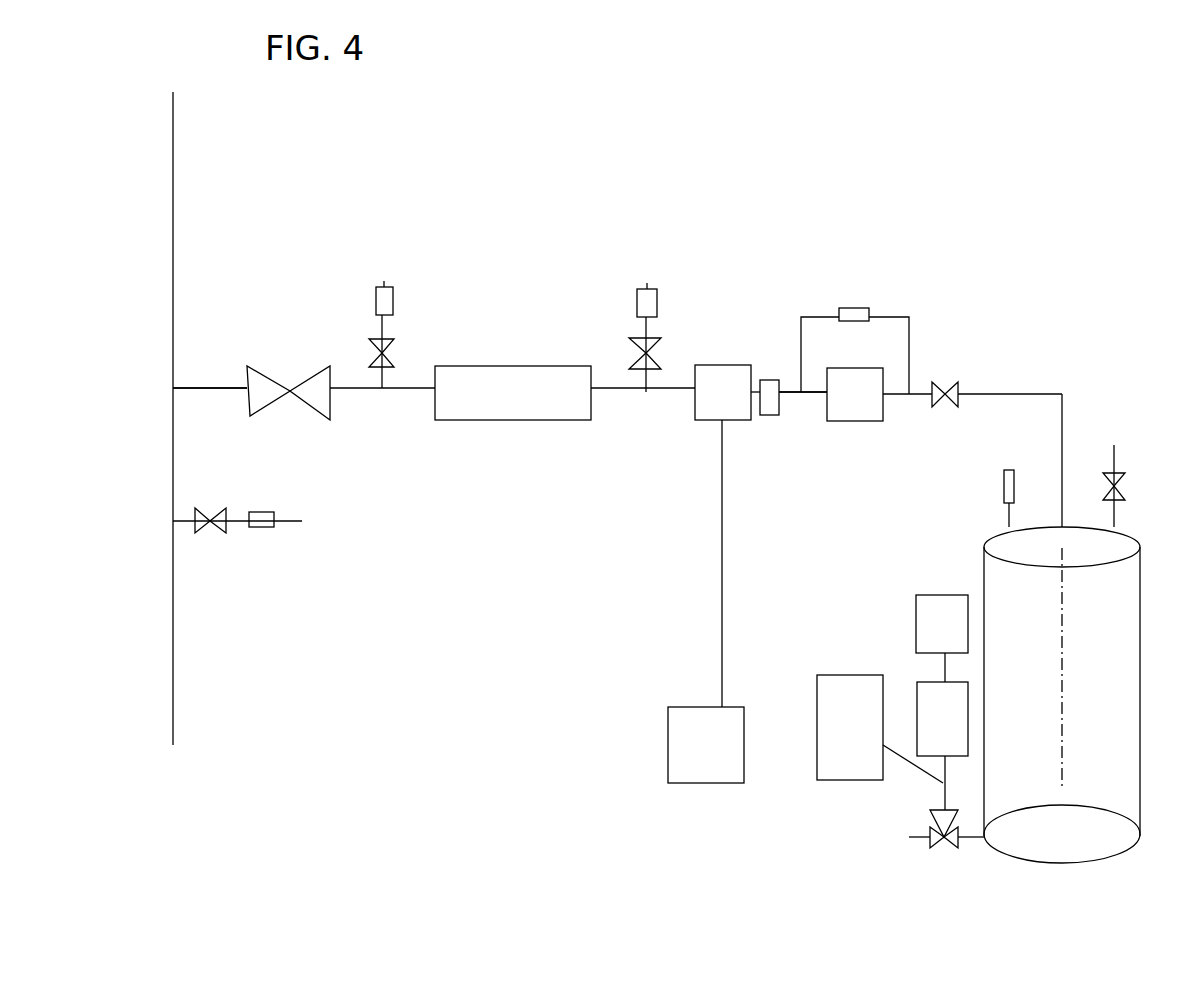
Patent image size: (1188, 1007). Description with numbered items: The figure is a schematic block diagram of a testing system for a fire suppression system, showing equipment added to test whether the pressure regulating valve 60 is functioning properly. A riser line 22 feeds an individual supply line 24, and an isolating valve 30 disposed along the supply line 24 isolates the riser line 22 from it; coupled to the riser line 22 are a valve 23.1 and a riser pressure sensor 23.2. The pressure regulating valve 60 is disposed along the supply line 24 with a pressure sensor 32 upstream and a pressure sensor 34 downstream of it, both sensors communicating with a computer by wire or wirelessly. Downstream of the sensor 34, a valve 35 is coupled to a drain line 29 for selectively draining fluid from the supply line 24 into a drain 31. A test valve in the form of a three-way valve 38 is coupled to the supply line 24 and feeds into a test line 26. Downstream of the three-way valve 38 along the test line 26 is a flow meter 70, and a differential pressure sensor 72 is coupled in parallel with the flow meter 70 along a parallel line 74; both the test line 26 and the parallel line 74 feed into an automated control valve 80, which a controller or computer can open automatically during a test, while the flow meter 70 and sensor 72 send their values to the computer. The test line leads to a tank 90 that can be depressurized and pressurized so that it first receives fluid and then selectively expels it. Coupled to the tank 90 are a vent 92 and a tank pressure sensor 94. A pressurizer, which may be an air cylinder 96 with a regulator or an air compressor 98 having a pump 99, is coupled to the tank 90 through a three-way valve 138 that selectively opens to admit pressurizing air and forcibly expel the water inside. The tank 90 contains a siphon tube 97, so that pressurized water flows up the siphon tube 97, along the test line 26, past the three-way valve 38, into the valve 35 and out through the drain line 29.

The riser line 22 is at (173, 197).
The supply line 24 is at (202, 388).
The isolating valve 30 is at (260, 368).
The pressure sensor 32 is at (407, 292).
The pressure regulating valve 60 is at (495, 366).
The pressure sensor 34 is at (663, 295).
The valve 35 is at (718, 365).
The three-way valve 38 is at (773, 386).
The test line 26 is at (790, 395).
The flow meter 70 is at (832, 422).
The differential pressure sensor 72 is at (840, 312).
The parallel line 74 is at (910, 317).
The automated control valve 80 is at (955, 386).
The drain line 29 is at (722, 547).
The drain 31 is at (668, 728).
The valve 23.1 is at (222, 535).
The riser pressure sensor 23.2 is at (270, 530).
The tank 90 is at (1142, 578).
The siphon tube 97 is at (1062, 658).
The tank pressure sensor 94 is at (1002, 482).
The vent 92 is at (1120, 475).
The pump 99 is at (916, 595).
The air compressor 98 is at (917, 682).
The air cylinder 96 is at (817, 675).
The three-way valve 138 is at (930, 812).